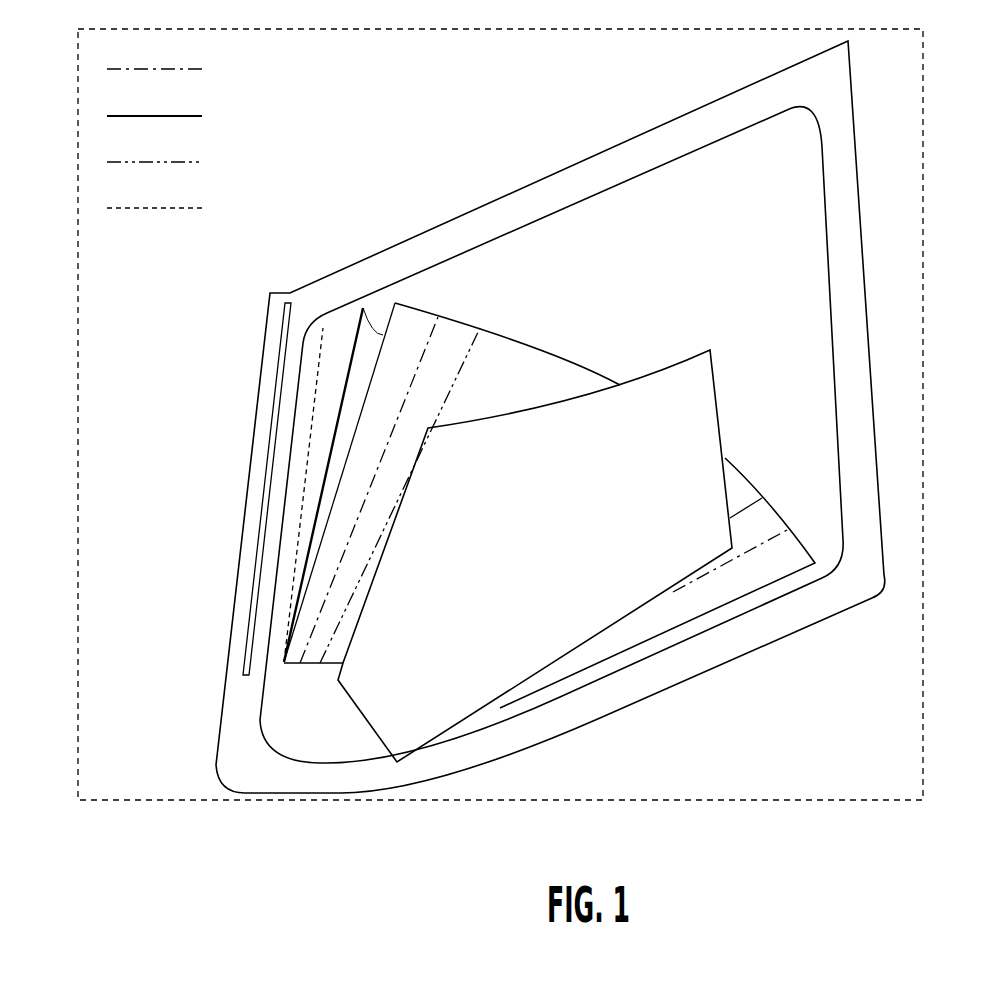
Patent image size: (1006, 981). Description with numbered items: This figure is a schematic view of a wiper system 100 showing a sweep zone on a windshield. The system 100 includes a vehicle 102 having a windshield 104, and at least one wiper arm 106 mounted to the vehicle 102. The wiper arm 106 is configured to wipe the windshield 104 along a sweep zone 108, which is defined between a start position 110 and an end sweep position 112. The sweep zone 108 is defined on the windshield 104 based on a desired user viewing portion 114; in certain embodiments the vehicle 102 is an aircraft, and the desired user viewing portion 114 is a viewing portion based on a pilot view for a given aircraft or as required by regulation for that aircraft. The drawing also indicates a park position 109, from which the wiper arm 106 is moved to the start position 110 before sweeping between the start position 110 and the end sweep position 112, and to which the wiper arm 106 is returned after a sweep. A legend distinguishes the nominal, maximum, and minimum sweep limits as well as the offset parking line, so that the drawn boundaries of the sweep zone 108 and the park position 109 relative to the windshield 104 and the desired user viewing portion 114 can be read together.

The system 100 is at (127, 839).
The vehicle 102 is at (845, 802).
The windshield 104 is at (805, 345).
The wiper arm 106 is at (338, 424).
The sweep zone 108 is at (598, 368).
The park position 109 is at (320, 358).
The start position 110 is at (383, 335).
The end sweep position 112 is at (800, 568).
The desired user viewing portion 114 is at (478, 681).